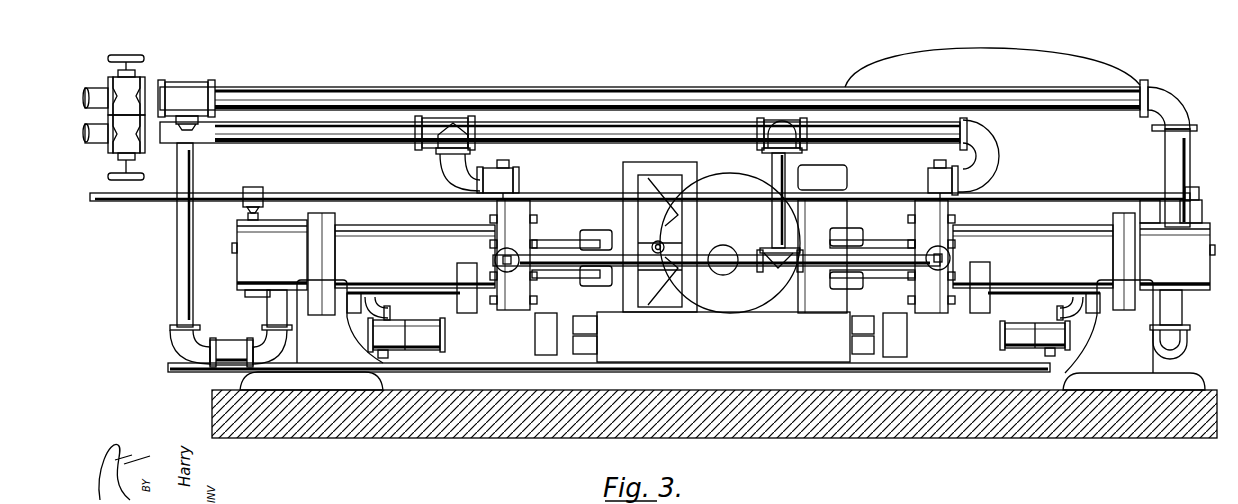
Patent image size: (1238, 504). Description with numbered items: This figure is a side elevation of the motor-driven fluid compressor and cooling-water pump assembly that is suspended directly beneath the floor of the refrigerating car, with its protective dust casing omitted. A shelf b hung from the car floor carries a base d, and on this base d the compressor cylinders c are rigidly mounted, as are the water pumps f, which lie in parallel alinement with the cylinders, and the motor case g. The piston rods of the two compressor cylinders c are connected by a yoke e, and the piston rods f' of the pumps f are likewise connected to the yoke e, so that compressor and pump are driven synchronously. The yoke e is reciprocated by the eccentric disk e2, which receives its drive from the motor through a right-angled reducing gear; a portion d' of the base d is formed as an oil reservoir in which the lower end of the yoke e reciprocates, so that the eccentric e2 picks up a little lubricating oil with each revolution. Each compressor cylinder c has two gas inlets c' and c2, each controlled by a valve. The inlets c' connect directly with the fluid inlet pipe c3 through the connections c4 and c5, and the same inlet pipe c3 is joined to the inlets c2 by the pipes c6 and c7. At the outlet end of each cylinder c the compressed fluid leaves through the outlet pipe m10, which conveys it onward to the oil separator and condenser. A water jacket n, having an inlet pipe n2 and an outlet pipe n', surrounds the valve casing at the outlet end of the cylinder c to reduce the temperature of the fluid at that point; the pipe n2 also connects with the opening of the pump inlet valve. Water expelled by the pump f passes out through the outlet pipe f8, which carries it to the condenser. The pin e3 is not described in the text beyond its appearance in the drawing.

The outlet pipe m10 is at (606, 90).
The fluid inlet pipe c3 is at (350, 137).
The connection c4 is at (447, 163).
The gas inlet c' is at (717, 180).
The connection c5 is at (1001, 158).
The pipe c6 is at (770, 167).
The pipe c7 is at (750, 272).
The outlet pipe of water jacket n' is at (646, 196).
The water jacket n is at (723, 258).
The compressor cylinder c is at (724, 269).
The gas inlet c2 is at (1012, 222).
The yoke e is at (630, 175).
The eccentric disk e2 is at (730, 243).
The pin e3 is at (652, 248).
The oil reservoir portion of base d' is at (721, 337).
The water pump f is at (719, 335).
The piston rod of pump f' is at (703, 339).
The inlet pipe of water jacket n2 is at (373, 310).
The outlet pipe f8 is at (951, 357).
The base d is at (722, 341).
The shelf b is at (515, 425).
The motor case g is at (967, 50).